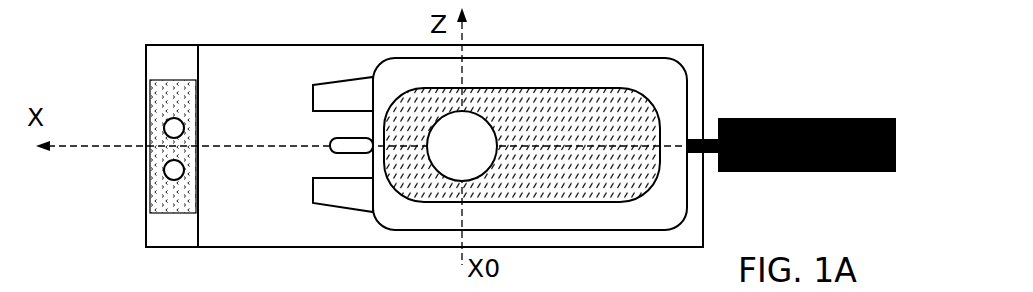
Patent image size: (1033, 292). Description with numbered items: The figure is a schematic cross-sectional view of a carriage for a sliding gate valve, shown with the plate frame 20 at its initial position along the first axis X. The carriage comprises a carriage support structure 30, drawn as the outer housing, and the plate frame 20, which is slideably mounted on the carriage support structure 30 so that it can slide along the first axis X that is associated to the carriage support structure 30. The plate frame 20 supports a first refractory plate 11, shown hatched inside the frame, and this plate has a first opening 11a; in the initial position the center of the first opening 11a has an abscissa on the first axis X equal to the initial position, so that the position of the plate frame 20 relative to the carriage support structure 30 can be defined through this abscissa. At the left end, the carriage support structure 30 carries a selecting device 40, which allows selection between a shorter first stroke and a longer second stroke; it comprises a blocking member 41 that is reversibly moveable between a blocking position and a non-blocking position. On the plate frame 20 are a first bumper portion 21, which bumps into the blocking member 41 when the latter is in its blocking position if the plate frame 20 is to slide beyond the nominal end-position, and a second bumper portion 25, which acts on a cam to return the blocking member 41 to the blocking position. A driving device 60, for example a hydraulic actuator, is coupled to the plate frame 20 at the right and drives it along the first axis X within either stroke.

The carriage support structure 30 is at (703, 52).
The selecting device 40 is at (146, 55).
The blocking member 41 is at (160, 192).
The first bumper portion 21 is at (320, 97).
The second bumper portion 25 is at (332, 145).
The plate frame 20 is at (380, 220).
The first refractory plate 11 is at (608, 175).
The first opening 11a is at (470, 135).
The driving device 60 is at (815, 172).